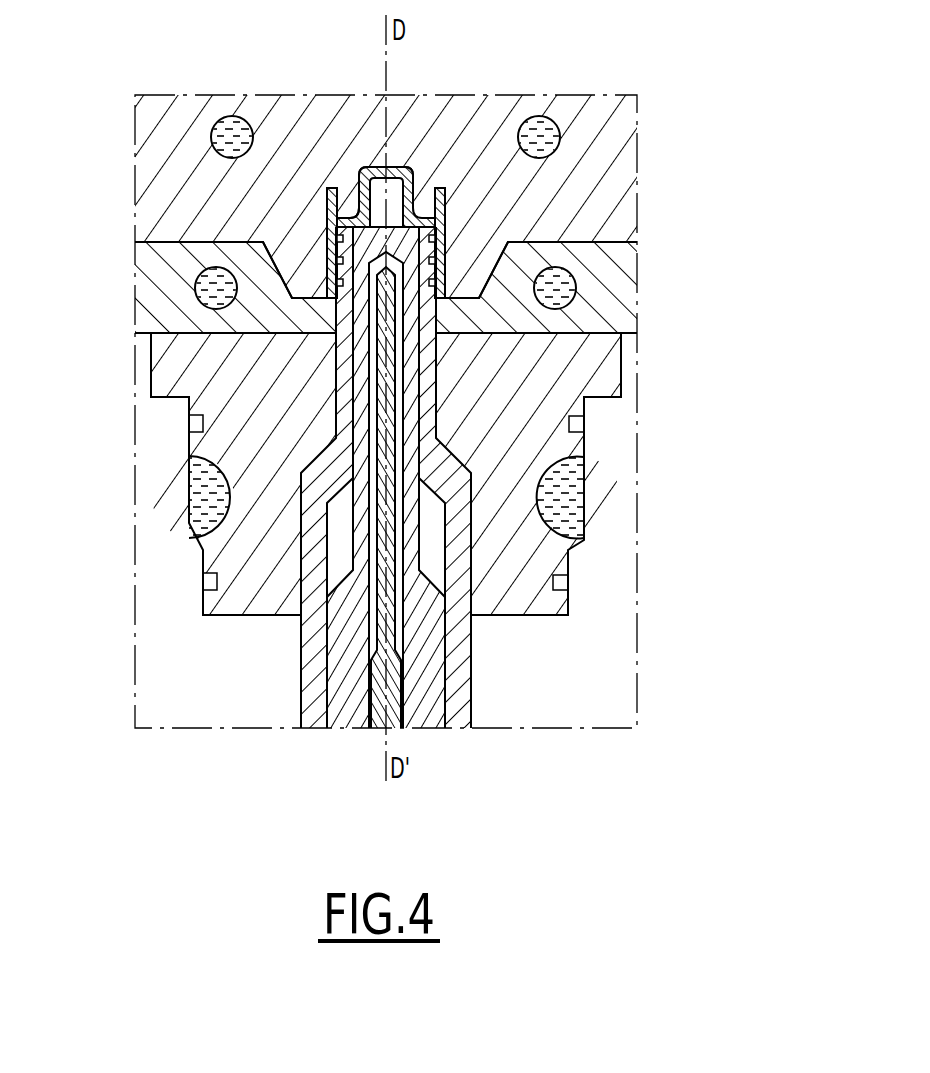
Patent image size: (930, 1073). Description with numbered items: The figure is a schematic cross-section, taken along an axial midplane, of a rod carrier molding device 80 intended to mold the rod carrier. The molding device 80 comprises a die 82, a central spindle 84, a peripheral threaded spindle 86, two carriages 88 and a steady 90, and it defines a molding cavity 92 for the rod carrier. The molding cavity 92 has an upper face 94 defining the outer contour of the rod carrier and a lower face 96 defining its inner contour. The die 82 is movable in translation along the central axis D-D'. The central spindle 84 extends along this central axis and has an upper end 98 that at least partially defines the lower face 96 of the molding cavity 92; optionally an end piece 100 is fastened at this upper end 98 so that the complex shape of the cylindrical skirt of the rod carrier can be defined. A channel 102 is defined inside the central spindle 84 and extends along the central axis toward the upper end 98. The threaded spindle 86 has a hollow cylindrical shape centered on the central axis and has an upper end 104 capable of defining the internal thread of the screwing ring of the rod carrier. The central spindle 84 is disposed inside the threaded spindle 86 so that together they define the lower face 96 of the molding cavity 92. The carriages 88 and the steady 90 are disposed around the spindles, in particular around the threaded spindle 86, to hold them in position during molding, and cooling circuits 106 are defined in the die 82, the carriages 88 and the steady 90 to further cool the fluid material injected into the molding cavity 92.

The rod carrier molding device 80 is at (660, 107).
The die 82 is at (612, 182).
The central spindle 84 is at (423, 600).
The peripheral threaded spindle 86 is at (445, 467).
The carriages 88 is at (607, 283).
The steady 90 is at (233, 448).
The molding cavity 92 is at (330, 222).
The upper face 94 is at (440, 188).
The lower face 96 is at (336, 220).
The upper end 98 is at (348, 199).
The end piece 100 is at (388, 172).
The channel 102 is at (367, 650).
The upper end 104 is at (330, 248).
The cooling circuits 106 is at (548, 132).